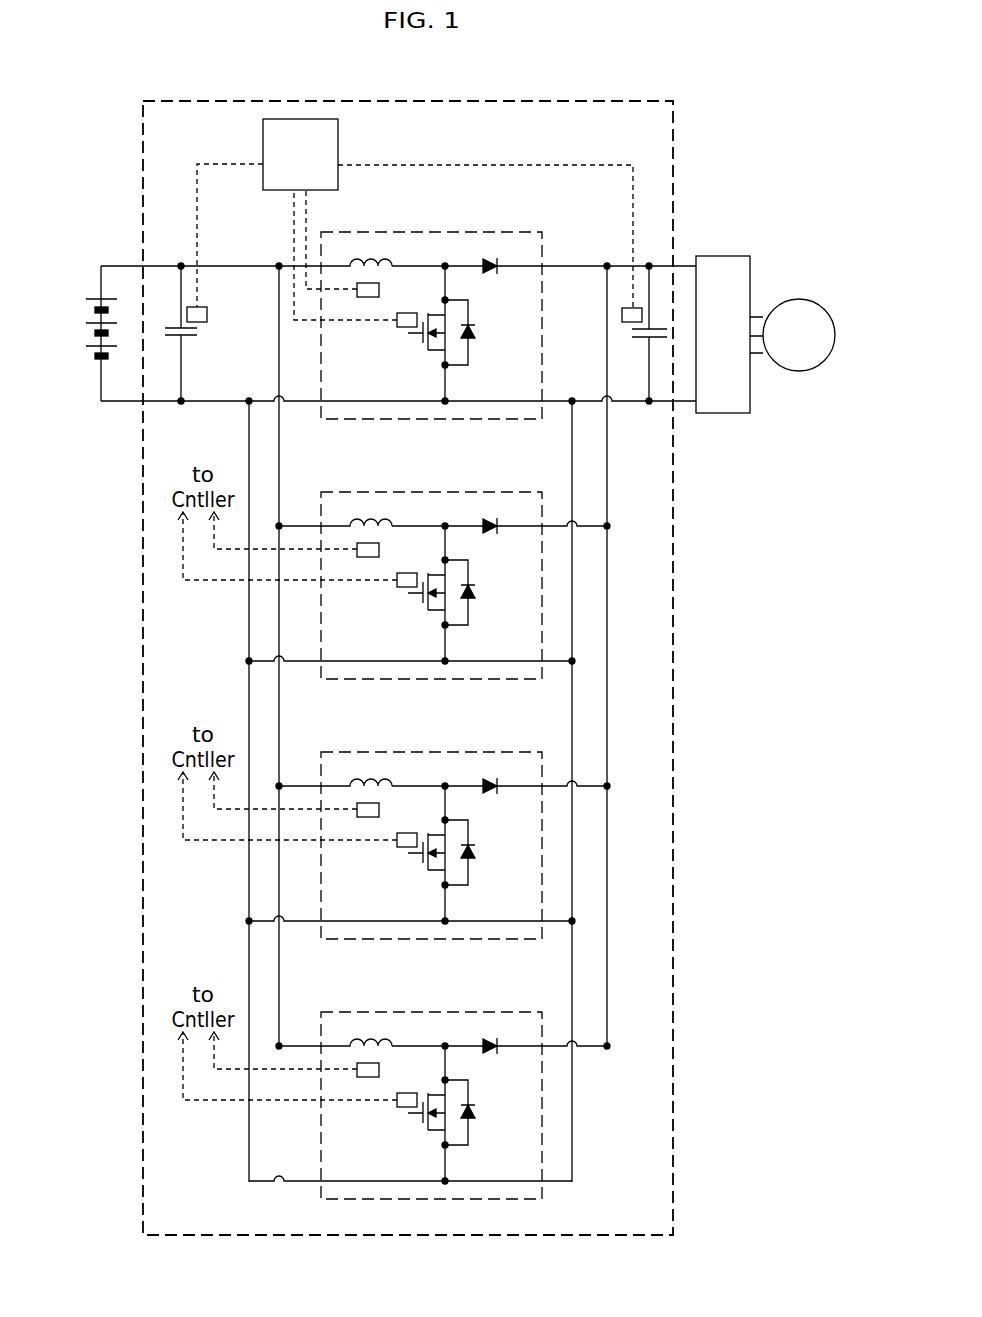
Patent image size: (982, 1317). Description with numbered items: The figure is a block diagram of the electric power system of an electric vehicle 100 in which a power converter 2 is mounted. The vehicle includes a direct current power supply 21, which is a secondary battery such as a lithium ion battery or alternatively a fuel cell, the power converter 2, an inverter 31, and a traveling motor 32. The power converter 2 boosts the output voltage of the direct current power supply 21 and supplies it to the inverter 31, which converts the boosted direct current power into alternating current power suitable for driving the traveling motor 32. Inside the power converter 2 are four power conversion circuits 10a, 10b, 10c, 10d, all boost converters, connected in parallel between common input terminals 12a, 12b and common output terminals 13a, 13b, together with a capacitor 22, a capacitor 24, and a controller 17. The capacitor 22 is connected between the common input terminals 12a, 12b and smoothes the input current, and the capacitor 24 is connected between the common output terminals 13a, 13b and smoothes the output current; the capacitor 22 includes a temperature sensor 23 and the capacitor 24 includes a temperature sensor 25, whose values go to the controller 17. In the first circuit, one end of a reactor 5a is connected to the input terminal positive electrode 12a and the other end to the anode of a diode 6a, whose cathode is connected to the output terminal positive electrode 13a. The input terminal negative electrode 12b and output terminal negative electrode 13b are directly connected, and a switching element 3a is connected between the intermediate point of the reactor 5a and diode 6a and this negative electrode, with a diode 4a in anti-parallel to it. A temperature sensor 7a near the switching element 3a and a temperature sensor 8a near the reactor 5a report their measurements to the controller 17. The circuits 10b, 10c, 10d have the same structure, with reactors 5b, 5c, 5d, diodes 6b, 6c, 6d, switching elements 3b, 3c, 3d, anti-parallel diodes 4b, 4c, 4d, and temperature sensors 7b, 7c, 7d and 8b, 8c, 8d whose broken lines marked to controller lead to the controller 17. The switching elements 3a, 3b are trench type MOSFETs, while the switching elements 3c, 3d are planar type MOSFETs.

The electric vehicle 100 is at (118, 104).
The power converter 2 is at (142, 157).
The controller 17 is at (263, 143).
The direct current power supply 21 is at (93, 298).
The capacitor 22 is at (197, 337).
The temperature sensor 23 is at (207, 315).
The capacitor 24 is at (635, 339).
The temperature sensor 25 is at (628, 306).
The inverter 31 is at (725, 256).
The traveling motor 32 is at (798, 299).
The input terminal positive electrode 12a is at (278, 265).
The input terminal negative electrode 12b is at (247, 404).
The output terminal positive electrode 13a is at (605, 268).
The output terminal negative electrode 13b is at (572, 399).
The power conversion circuit 10a is at (525, 227).
The power conversion circuit 10b is at (440, 560).
The power conversion circuit 10c is at (440, 820).
The power conversion circuit 10d is at (440, 1080).
The reactor 5a is at (360, 256).
The reactor 5b is at (367, 492).
The reactor 5c is at (367, 752).
The reactor 5d is at (367, 1012).
The diode 6a is at (487, 260).
The diode 6b is at (477, 496).
The diode 6c is at (477, 756).
The diode 6d is at (477, 1016).
The temperature sensor 7a is at (397, 327).
The temperature sensor 7b is at (381, 595).
The temperature sensor 7c is at (381, 855).
The temperature sensor 7d is at (381, 1115).
The temperature sensor 8a is at (379, 289).
The temperature sensor 8b is at (395, 549).
The temperature sensor 8c is at (395, 809).
The temperature sensor 8d is at (395, 1069).
The switching element 3a is at (428, 352).
The switching element 3b is at (408, 610).
The switching element 3c is at (408, 870).
The switching element 3d is at (408, 1130).
The diode 4a is at (475, 335).
The diode 4b is at (485, 594).
The diode 4c is at (485, 854).
The diode 4d is at (485, 1114).